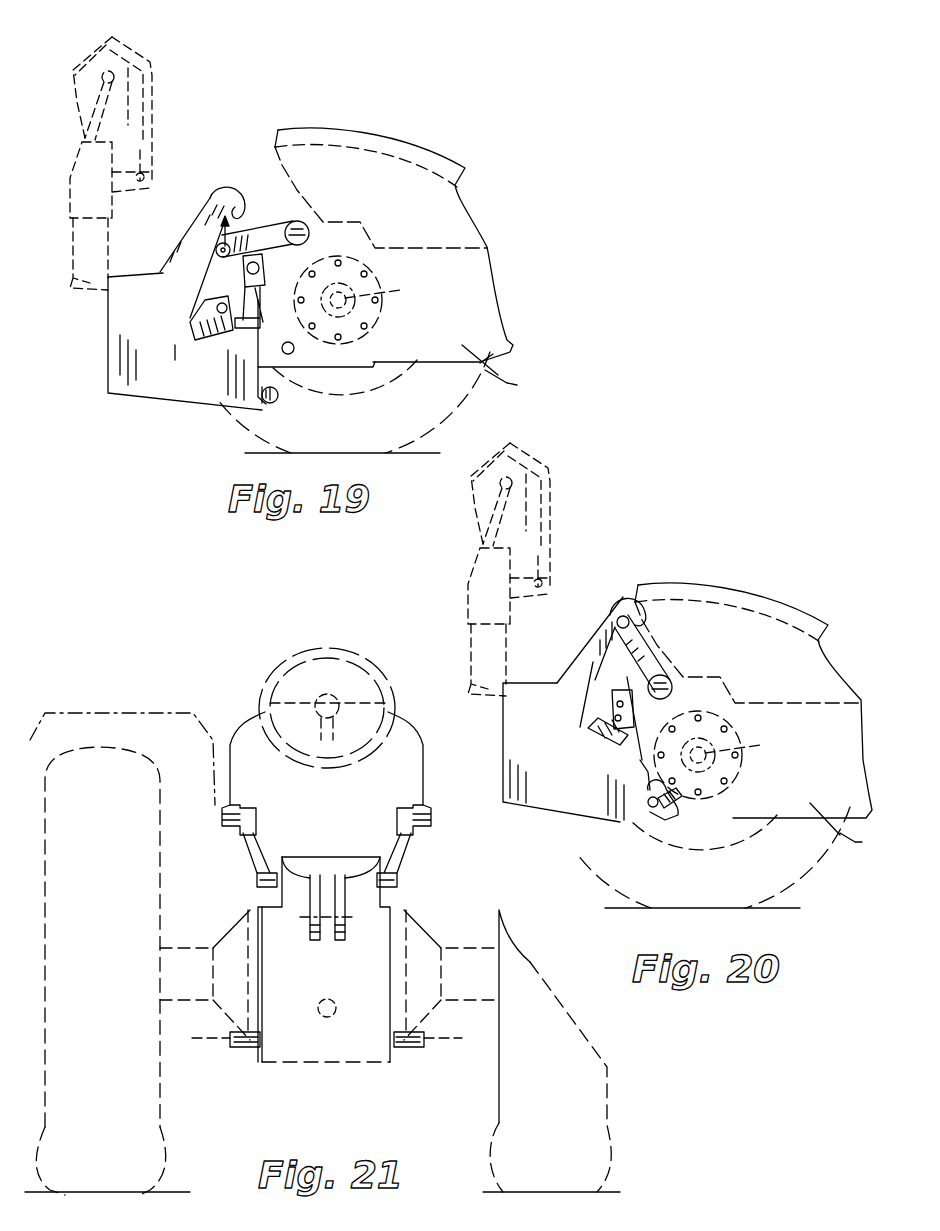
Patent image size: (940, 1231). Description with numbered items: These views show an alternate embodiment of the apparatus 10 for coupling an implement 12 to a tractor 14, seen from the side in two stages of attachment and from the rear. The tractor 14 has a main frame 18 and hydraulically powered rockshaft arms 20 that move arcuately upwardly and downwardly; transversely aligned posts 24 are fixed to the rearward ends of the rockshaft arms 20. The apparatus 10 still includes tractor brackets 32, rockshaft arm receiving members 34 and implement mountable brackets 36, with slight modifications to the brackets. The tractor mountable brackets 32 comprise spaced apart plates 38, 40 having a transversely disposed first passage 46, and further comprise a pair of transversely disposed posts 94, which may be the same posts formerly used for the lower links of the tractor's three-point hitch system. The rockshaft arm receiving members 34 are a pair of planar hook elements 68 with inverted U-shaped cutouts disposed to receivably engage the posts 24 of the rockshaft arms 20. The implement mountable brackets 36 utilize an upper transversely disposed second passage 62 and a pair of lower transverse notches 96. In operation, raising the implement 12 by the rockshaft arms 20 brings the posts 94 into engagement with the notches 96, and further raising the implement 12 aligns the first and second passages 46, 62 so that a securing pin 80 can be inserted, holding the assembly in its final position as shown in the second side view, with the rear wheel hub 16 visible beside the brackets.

In FIG. 19, the apparatus 10 is at (222, 108).
In FIG. 20, the apparatus 10 is at (640, 558).
In FIG. 19, the implement 12 is at (158, 88).
In FIG. 20, the implement 12 is at (560, 557).
In FIG. 19, the tractor 14 is at (426, 149).
In FIG. 20, the tractor 14 is at (792, 603).
In FIG. 21, the tractor 14 is at (144, 713).
In FIG. 19, the rear axle hub 16 is at (366, 300).
In FIG. 20, the rear axle hub 16 is at (730, 755).
In FIG. 21, the rear axle hub 16 is at (203, 950).
In FIG. 19, the main frame 18 is at (377, 402).
In FIG. 20, the main frame 18 is at (732, 857).
In FIG. 21, the main frame 18 is at (322, 971).
In FIG. 19, the rockshaft arms 20 is at (261, 226).
In FIG. 20, the rockshaft arms 20 is at (650, 660).
In FIG. 21, the rockshaft arms 20 is at (272, 845).
In FIG. 21, the posts 24 is at (238, 808).
In FIG. 19, the tractor brackets 32 is at (276, 284).
In FIG. 20, the tractor brackets 32 is at (645, 718).
In FIG. 21, the tractor brackets 32 is at (358, 947).
In FIG. 19, the rockshaft arm receiving members 34 is at (187, 233).
In FIG. 20, the rockshaft arm receiving members 34 is at (585, 660).
In FIG. 19, the implement mountable brackets 36 is at (198, 372).
In FIG. 20, the implement mountable brackets 36 is at (597, 781).
In FIG. 19, the plate 38 is at (304, 342).
In FIG. 21, the plate 38 is at (380, 857).
In FIG. 21, the plate 40 is at (282, 857).
In FIG. 19, the first passage 46 is at (219, 244).
In FIG. 21, the first passage 46 is at (356, 898).
In FIG. 19, the second passage 62 is at (190, 316).
In FIG. 19, the hook elements 68 is at (190, 210).
In FIG. 20, the hook elements 68 is at (588, 622).
In FIG. 20, the securing pin 80 is at (612, 708).
In FIG. 19, the posts 94 is at (294, 350).
In FIG. 20, the posts 94 is at (670, 802).
In FIG. 21, the posts 94 is at (232, 1033).
In FIG. 19, the notches 96 is at (278, 400).
In FIG. 20, the notches 96 is at (655, 795).